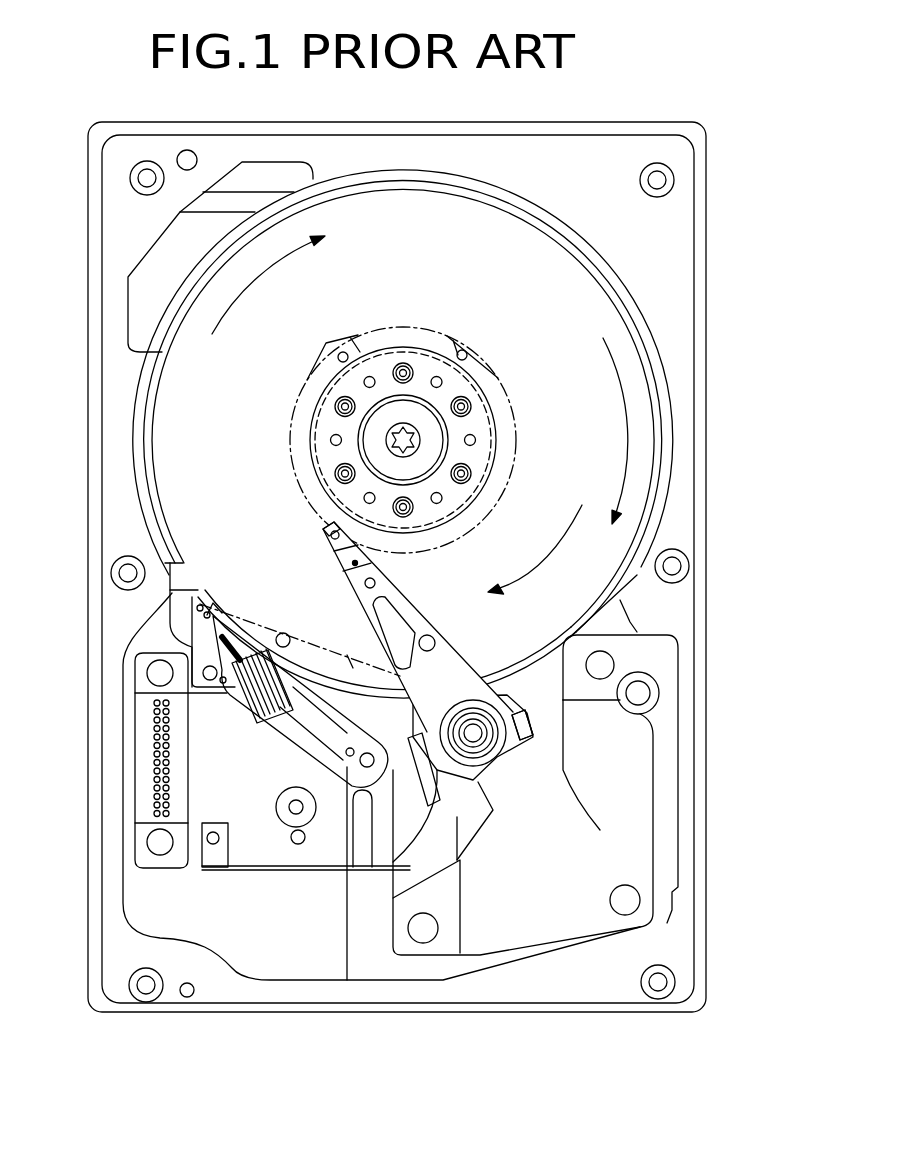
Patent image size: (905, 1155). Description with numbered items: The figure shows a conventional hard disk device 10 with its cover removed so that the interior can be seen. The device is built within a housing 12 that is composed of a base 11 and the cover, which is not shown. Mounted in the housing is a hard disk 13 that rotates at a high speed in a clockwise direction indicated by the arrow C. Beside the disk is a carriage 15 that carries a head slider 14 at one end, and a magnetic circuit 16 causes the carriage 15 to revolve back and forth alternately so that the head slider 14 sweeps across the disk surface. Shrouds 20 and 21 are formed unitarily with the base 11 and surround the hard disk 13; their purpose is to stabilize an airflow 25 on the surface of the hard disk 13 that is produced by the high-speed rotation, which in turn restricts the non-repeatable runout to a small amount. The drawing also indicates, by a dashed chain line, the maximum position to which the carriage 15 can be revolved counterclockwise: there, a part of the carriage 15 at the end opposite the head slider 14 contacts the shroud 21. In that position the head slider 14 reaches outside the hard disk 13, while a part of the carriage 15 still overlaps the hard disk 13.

The hard disk device 10 is at (773, 127).
The base 11 is at (683, 496).
The housing 12 is at (708, 262).
The hard disk 13 is at (180, 382).
The head slider 14 is at (317, 517).
The carriage 15 is at (353, 670).
The magnetic circuit 16 is at (637, 736).
The shroud 20 is at (667, 380).
The shroud 21 is at (523, 668).
The airflow 25 is at (242, 292).